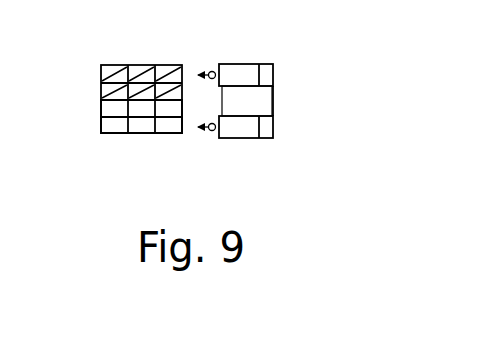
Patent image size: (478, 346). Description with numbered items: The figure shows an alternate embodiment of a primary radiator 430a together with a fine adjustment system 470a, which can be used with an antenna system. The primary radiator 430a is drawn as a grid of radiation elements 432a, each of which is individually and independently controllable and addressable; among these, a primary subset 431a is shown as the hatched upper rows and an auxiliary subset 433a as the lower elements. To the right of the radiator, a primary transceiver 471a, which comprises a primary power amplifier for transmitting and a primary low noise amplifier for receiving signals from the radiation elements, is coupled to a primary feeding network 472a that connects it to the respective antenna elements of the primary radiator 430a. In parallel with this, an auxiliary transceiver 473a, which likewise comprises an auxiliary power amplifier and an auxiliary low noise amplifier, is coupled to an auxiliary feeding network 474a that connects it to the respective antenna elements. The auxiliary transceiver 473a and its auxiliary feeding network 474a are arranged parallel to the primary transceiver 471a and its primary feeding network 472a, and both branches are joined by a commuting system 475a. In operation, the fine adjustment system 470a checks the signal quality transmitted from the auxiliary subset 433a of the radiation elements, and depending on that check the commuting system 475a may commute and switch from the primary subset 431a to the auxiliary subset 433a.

The primary radiator 430a is at (88, 88).
The primary subset 431a is at (110, 75).
The radiation elements 432a is at (95, 110).
The auxiliary subset 433a is at (110, 128).
The fine adjustment system 470a is at (377, 143).
The primary transceiver 471a is at (258, 70).
The primary feeding network 472a is at (212, 68).
The auxiliary transceiver 473a is at (258, 132).
The auxiliary feeding network 474a is at (212, 133).
The commuting system 475a is at (273, 102).